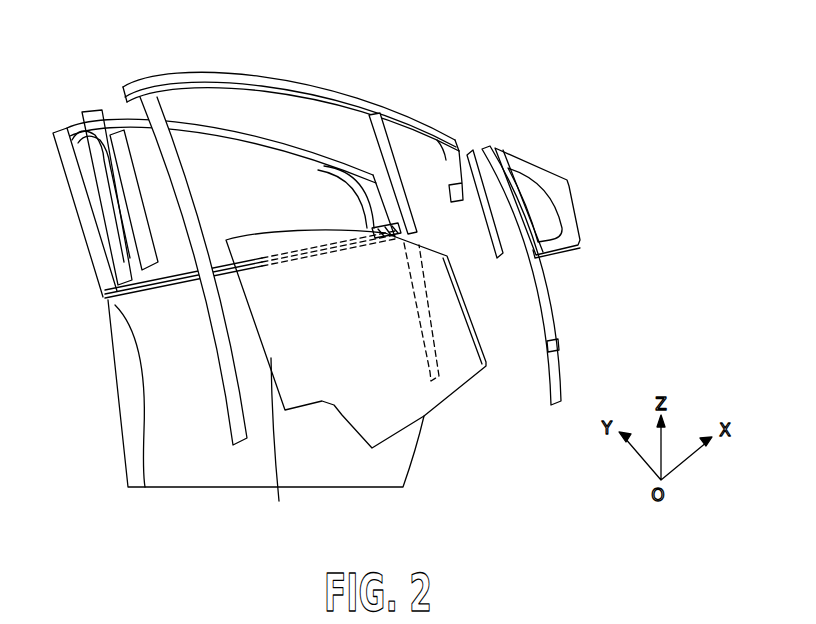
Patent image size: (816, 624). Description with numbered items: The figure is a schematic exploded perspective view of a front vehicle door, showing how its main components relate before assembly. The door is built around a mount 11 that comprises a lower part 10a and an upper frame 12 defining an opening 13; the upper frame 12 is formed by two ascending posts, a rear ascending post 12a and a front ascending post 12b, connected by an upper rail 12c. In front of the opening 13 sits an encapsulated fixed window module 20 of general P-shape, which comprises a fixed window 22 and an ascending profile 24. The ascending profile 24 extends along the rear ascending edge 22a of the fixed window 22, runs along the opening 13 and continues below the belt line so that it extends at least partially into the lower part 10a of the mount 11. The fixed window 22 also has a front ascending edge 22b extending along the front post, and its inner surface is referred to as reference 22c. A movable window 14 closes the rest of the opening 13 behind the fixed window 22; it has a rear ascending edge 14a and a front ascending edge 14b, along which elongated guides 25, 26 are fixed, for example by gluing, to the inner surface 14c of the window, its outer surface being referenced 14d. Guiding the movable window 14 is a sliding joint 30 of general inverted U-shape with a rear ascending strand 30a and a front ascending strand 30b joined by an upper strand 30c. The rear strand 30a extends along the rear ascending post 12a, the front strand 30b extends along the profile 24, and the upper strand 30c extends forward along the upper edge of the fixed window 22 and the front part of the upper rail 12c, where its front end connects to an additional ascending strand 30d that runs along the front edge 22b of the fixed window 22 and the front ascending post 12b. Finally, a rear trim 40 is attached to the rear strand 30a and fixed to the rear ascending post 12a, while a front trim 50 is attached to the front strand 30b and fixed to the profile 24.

The lower part 10a is at (175, 469).
The mount 11 is at (242, 429).
The upper frame 12 is at (223, 158).
The rear ascending post 12a is at (83, 221).
The front ascending post 12b is at (363, 207).
The upper rail 12c is at (255, 131).
The opening 13 is at (246, 199).
The movable window 14 is at (381, 370).
The rear ascending edge 14a is at (274, 442).
The front ascending edge 14b is at (506, 374).
The inner surface 14c is at (435, 268).
The outer surface 14d is at (434, 278).
The encapsulated fixed window module 20 is at (568, 243).
The fixed window 22 is at (575, 170).
The rear ascending edge 22a is at (520, 187).
The front ascending edge 22b is at (614, 228).
The inner surface 22c is at (544, 157).
The ascending profile 24 is at (551, 325).
The guide 25 is at (274, 442).
The guide 26 is at (483, 333).
The sliding joint 30 is at (293, 228).
The rear ascending strand 30a is at (183, 175).
The front ascending strand 30b is at (401, 194).
The upper strand 30c is at (240, 73).
The additional ascending strand 30d is at (452, 167).
The rear trim 40 is at (143, 233).
The front trim 50 is at (465, 157).